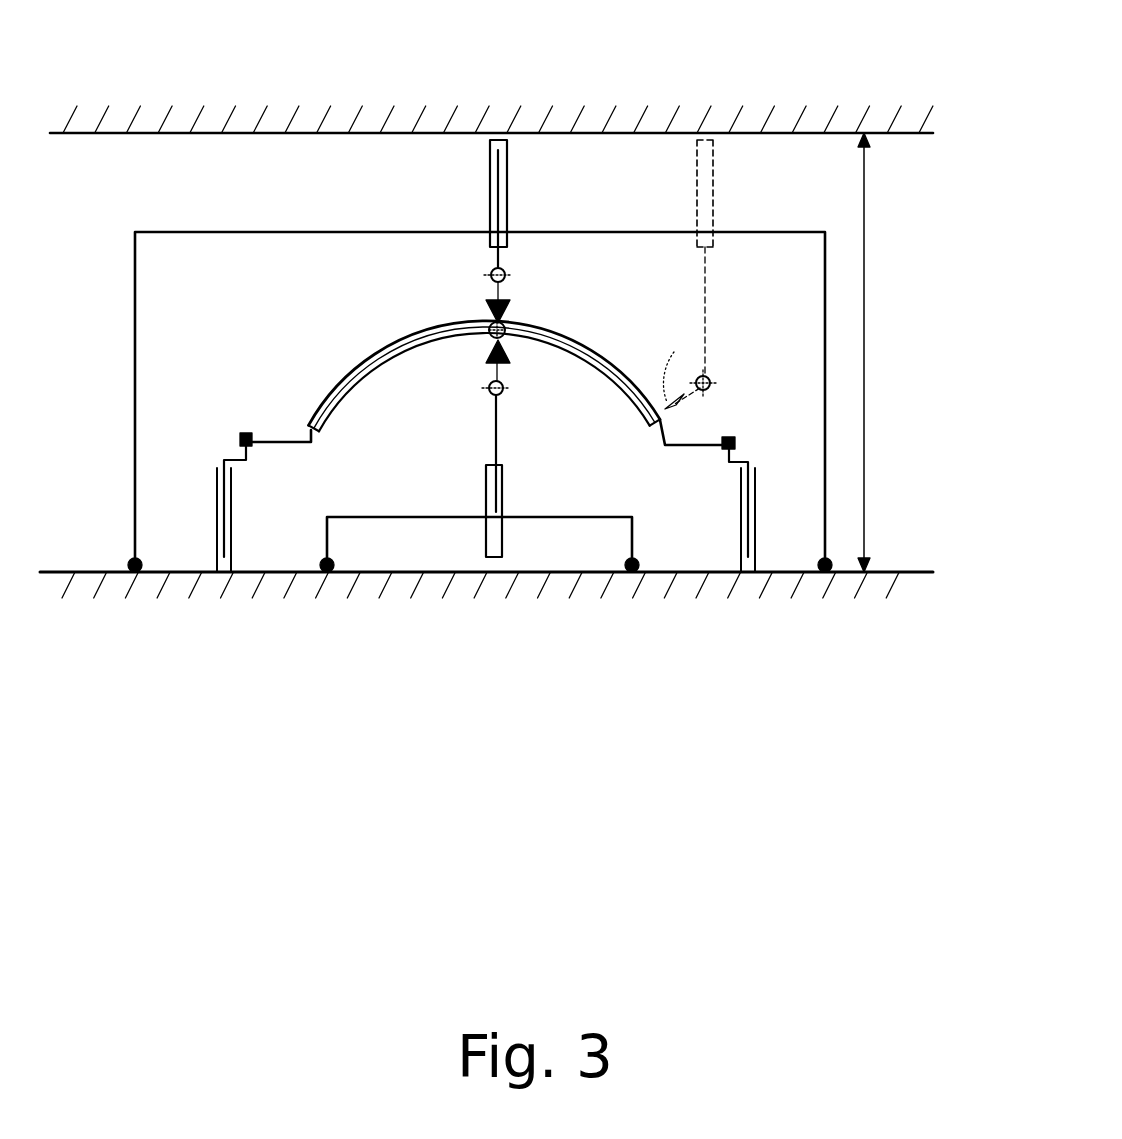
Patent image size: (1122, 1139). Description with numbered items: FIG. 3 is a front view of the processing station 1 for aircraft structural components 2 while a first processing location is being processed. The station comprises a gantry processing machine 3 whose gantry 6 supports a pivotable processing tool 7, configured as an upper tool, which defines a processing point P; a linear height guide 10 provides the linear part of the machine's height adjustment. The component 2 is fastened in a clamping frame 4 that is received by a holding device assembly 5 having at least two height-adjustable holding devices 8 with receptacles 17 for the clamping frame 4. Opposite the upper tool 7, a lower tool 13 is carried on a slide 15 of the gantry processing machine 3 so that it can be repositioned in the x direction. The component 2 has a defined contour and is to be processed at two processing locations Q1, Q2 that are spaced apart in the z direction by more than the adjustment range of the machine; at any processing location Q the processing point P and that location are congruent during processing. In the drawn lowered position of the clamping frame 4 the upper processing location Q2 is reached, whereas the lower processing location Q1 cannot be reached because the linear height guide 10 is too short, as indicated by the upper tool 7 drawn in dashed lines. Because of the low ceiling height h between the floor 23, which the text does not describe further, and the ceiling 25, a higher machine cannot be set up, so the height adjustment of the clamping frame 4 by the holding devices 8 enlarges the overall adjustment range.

The processing station 1 is at (443, 354).
The aircraft structural component 2 is at (364, 366).
The gantry processing machine 3 is at (449, 355).
The clamping frame 4 is at (270, 419).
The holding device assembly 5 is at (471, 395).
The gantry 6 is at (315, 213).
The processing tool 7 is at (493, 322).
The holding device 8 is at (210, 535).
The linear height guide 10 is at (697, 212).
The lower tool 13 is at (487, 366).
The slide 15 is at (400, 520).
The receptacle 17 is at (248, 447).
The floor 23 is at (95, 575).
The ceiling 25 is at (750, 133).
The processing point P is at (490, 330).
The processing location Q is at (505, 347).
The first processing location Q1 is at (651, 427).
The second processing location Q2 is at (506, 328).
The ceiling height h is at (868, 335).